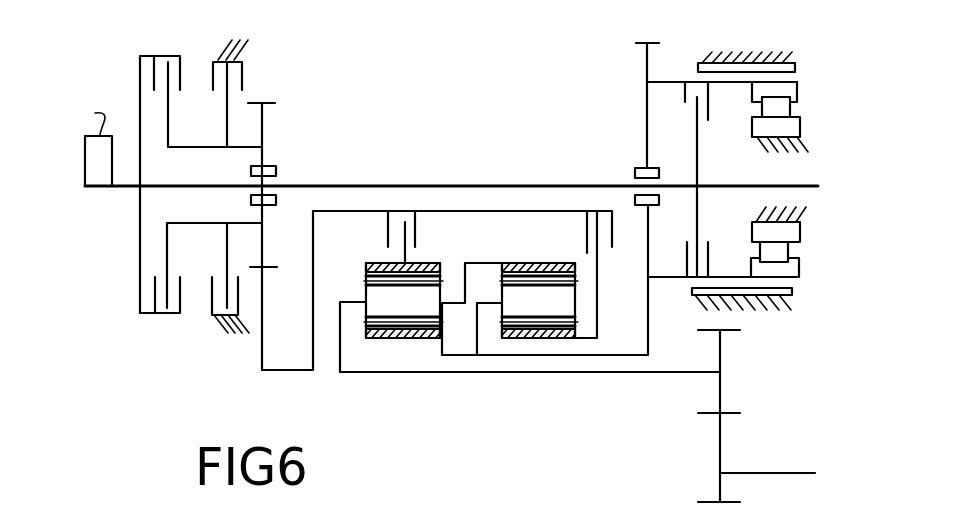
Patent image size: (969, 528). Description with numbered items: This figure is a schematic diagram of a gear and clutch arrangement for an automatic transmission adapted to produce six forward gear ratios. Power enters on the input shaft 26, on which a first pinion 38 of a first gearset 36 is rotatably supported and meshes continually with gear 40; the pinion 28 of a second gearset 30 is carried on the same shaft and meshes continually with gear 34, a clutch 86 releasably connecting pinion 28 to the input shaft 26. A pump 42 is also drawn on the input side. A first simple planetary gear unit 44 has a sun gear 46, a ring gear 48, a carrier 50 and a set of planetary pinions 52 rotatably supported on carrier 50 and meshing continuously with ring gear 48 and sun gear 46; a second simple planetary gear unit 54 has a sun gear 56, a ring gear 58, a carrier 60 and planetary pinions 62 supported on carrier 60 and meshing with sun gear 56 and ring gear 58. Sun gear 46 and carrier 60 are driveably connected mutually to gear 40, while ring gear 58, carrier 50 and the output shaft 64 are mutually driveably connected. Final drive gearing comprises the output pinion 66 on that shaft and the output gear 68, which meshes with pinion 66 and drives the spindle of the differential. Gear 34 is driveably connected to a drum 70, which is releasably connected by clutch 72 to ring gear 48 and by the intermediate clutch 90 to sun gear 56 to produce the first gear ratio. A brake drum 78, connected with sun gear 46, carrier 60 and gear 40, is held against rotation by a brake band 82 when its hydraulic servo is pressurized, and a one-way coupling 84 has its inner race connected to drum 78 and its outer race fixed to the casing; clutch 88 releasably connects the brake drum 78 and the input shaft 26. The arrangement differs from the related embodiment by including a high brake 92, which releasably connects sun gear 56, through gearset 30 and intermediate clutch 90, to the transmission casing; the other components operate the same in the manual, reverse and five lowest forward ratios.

The input shaft 26 is at (815, 187).
The pinion 28 is at (264, 132).
The second gearset 30 is at (325, 73).
The gear 34 is at (262, 335).
The first gearset 36 is at (630, 85).
The first pinion 38 is at (687, 179).
The gear 40 is at (648, 336).
The pump 42 is at (85, 153).
The first simple planetary gear unit 44 is at (385, 235).
The sun gear 46 is at (370, 357).
The ring gear 48 is at (420, 263).
The carrier 50 is at (452, 300).
The planetary pinions 52 is at (385, 300).
The second simple planetary gear unit 54 is at (577, 238).
The sun gear 56 is at (510, 340).
The ring gear 58 is at (511, 262).
The carrier 60 is at (475, 335).
The planetary pinions 62 is at (553, 303).
The output shaft 64 is at (597, 373).
The output pinion 66 is at (722, 395).
The output gear 68 is at (722, 452).
The drum 70 is at (467, 210).
The clutch 72 is at (408, 228).
The brake drum 78 is at (663, 82).
The brake band 82 is at (793, 65).
The coupling 84 is at (783, 108).
The clutch 86 is at (165, 72).
The clutch 88 is at (687, 103).
The intermediate clutch 90 is at (598, 233).
The high brake 92 is at (218, 70).